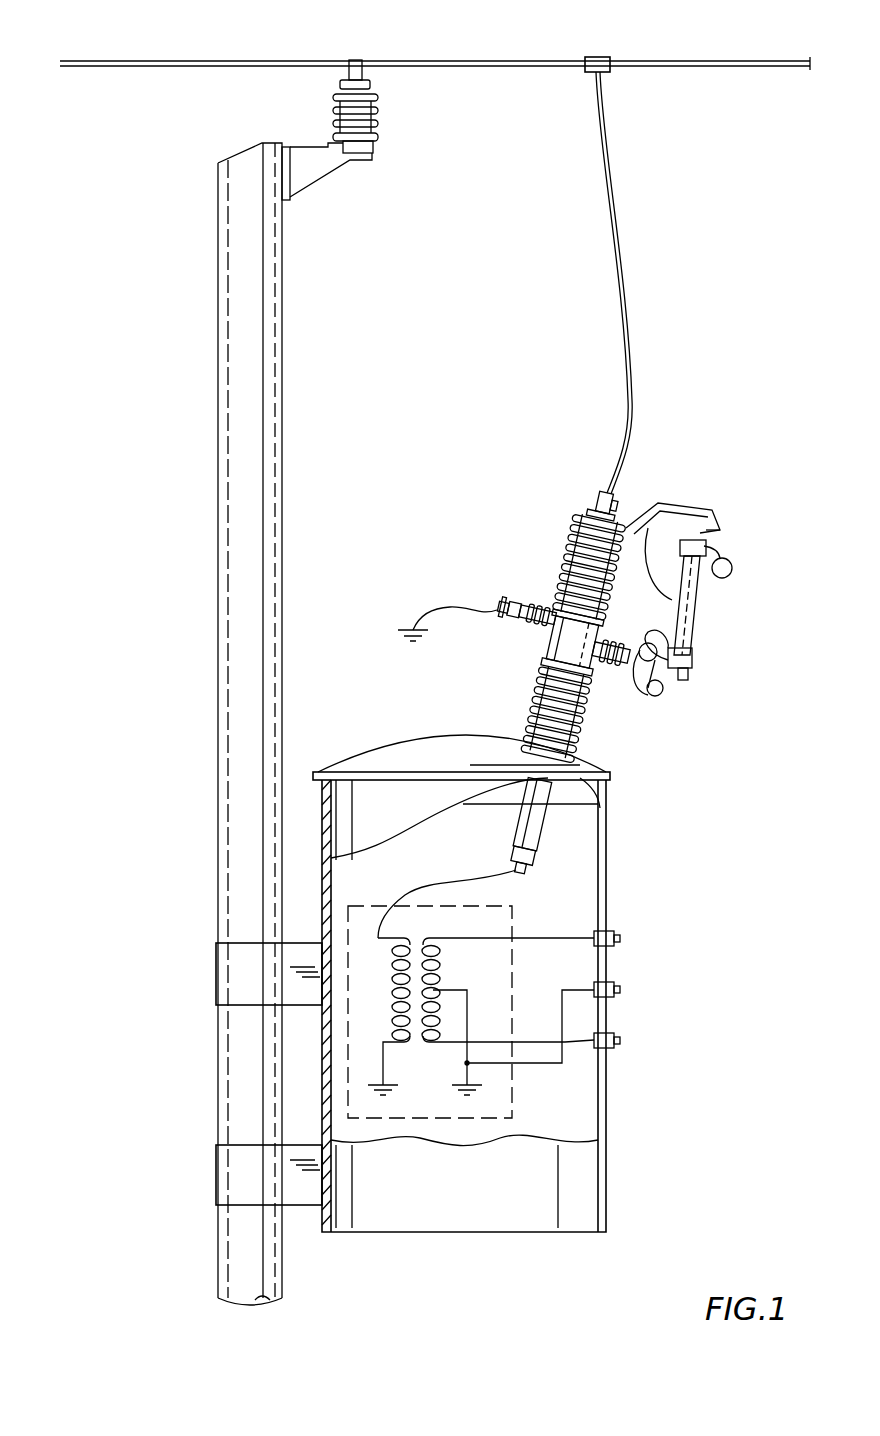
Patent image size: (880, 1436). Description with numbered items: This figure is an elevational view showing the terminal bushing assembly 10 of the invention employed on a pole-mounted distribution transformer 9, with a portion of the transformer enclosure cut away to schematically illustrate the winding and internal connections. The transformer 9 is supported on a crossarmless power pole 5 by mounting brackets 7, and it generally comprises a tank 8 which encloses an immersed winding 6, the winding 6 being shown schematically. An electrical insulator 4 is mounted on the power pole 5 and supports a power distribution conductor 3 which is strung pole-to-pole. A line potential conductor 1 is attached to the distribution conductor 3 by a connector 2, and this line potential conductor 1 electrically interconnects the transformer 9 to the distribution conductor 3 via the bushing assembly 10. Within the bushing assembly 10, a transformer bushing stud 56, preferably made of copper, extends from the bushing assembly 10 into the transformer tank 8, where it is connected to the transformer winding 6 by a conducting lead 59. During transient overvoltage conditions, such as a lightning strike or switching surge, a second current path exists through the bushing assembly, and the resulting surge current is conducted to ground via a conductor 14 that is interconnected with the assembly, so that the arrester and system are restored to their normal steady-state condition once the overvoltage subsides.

The line potential conductor 1 is at (626, 468).
The connector 2 is at (598, 55).
The power distribution conductor 3 is at (741, 60).
The electrical insulator 4 is at (377, 106).
The crossarmless power pole 5 is at (272, 299).
The winding 6 is at (383, 964).
The mounting brackets 7 is at (216, 972).
The tank 8 is at (585, 1050).
The distribution transformer 9 is at (620, 771).
The terminal bushing assembly 10 is at (562, 518).
The conductor 14 is at (448, 608).
The transformer bushing stud 56 is at (548, 838).
The conducting lead 59 is at (447, 880).